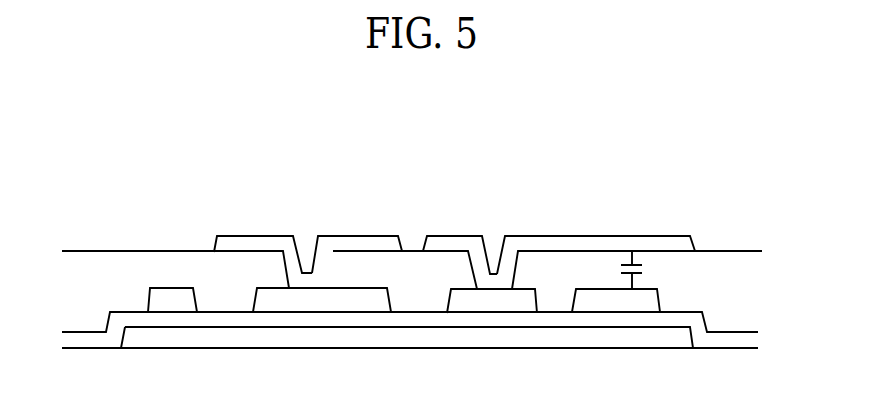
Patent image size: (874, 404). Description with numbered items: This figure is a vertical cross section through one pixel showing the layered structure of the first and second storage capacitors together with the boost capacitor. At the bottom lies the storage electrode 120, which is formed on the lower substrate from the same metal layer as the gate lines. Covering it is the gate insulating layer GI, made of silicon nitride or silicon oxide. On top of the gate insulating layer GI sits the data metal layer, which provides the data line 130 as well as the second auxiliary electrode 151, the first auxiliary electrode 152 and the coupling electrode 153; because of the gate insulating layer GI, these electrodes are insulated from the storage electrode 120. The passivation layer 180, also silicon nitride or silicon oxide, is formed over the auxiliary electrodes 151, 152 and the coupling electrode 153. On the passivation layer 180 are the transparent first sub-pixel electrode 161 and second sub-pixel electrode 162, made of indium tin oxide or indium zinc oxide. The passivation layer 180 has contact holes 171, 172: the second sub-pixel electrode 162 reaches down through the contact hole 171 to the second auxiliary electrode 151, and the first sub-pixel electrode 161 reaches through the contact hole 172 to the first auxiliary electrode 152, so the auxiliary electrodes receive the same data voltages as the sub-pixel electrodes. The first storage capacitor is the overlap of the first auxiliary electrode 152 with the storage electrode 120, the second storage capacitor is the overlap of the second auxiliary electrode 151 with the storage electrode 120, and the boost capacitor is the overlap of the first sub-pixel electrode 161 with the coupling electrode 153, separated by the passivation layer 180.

The storage electrode 120 is at (414, 338).
The gate insulating layer GI is at (668, 322).
The data line 130 is at (170, 302).
The second auxiliary electrode 151 is at (322, 300).
The first auxiliary electrode 152 is at (493, 300).
The coupling electrode 153 is at (603, 300).
The passivation layer 180 is at (728, 292).
The second sub-pixel electrode 162 is at (250, 245).
The contact hole 171 is at (328, 265).
The first sub-pixel electrode 161 is at (450, 245).
The contact hole 172 is at (513, 263).